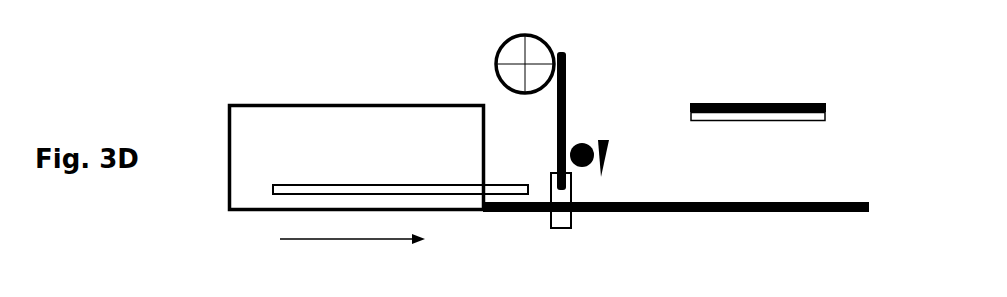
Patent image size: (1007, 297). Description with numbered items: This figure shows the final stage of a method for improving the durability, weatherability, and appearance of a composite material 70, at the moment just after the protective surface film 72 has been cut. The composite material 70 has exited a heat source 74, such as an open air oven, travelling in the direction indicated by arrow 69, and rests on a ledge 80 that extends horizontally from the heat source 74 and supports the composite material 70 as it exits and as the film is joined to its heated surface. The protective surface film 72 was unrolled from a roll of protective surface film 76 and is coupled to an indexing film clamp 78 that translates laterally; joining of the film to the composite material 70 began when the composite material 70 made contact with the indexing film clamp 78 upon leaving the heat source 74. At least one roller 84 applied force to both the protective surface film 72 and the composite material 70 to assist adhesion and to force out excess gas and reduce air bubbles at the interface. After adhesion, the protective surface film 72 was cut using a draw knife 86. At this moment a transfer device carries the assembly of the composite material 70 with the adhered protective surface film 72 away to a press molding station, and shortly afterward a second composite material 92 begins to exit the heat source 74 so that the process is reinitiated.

The arrow 69 is at (357, 240).
The composite material 70 is at (759, 122).
The protective surface film 72 is at (557, 118).
The heat source 74 is at (227, 156).
The roll of protective surface film 76 is at (501, 47).
The indexing film clamp 78 is at (561, 229).
The ledge 80 is at (679, 213).
The roller 84 is at (585, 146).
The draw knife 86 is at (609, 154).
The second composite material 92 is at (500, 185).